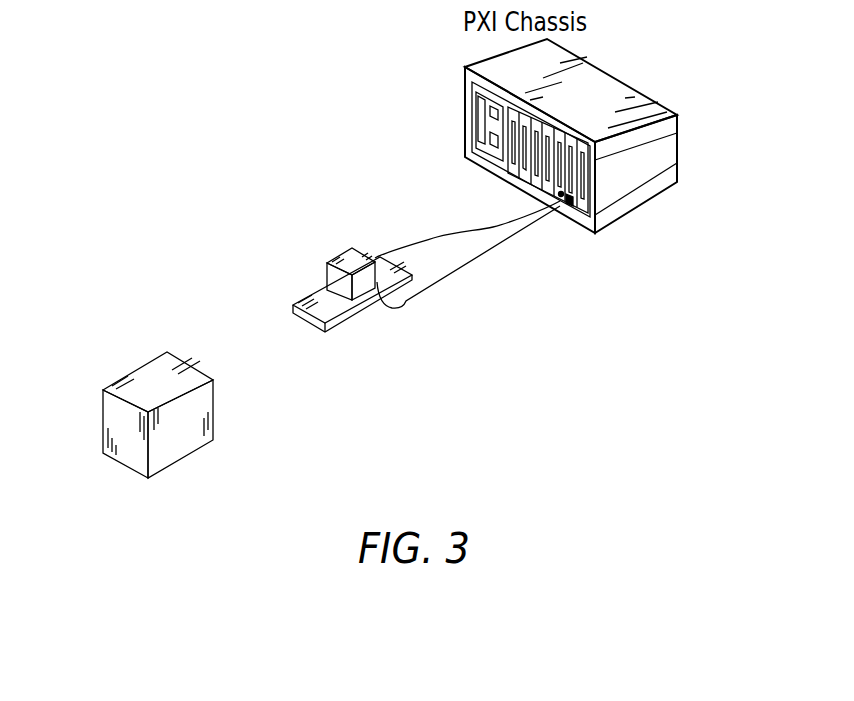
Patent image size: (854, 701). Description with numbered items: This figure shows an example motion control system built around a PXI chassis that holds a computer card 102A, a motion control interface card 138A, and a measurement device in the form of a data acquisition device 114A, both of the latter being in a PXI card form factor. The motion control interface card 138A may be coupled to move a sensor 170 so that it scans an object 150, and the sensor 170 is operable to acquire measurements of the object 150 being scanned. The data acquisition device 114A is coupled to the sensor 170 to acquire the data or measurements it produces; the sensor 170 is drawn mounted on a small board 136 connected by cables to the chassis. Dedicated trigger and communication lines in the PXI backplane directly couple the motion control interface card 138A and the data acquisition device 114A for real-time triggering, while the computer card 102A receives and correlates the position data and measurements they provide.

The computer card 102A is at (425, 130).
The data acquisition device 114A is at (479, 259).
The motion control interface card 138A is at (669, 253).
The DAQ board / unit under test board 136 is at (317, 294).
The sensor 170 is at (316, 263).
The object 150 is at (129, 411).